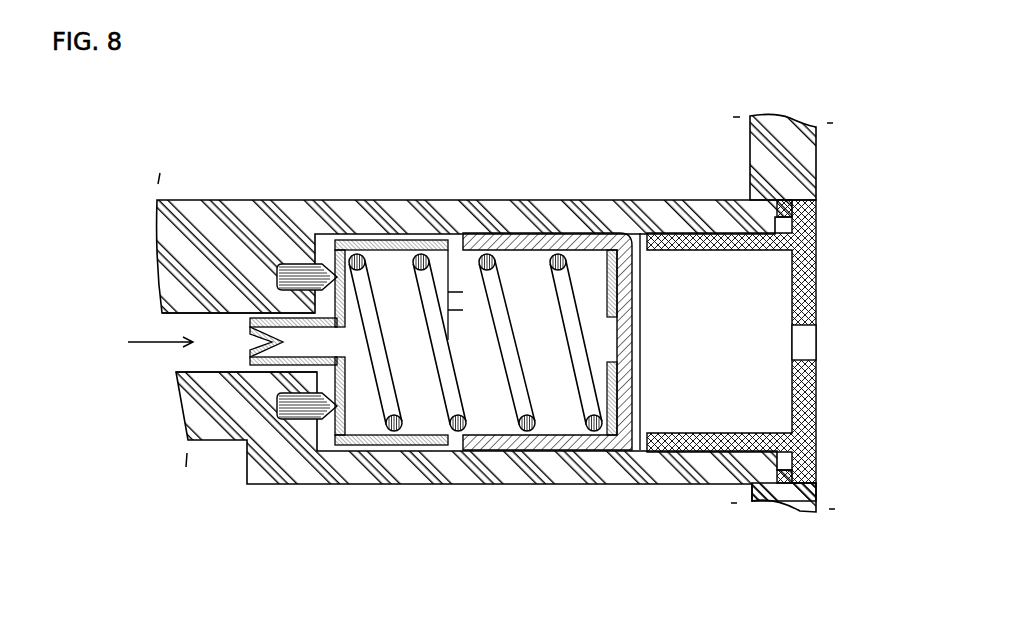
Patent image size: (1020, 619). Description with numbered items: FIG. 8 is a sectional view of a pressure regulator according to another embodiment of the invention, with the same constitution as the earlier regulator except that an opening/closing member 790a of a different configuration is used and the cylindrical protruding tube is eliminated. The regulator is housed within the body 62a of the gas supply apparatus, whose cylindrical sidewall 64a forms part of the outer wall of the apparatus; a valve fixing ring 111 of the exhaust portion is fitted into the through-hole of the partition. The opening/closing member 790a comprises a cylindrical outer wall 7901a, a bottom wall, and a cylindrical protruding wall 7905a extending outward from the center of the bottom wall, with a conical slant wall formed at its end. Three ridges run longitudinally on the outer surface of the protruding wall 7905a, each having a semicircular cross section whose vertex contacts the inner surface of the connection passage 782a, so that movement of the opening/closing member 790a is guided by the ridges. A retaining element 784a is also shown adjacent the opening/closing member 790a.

The body 62a is at (646, 504).
The sidewall 64a is at (817, 155).
The valve fixing ring 111 is at (250, 312).
The connection passage 782a is at (213, 355).
The cylindrical protruding wall 7905a is at (278, 366).
The opening/closing member 790a is at (387, 238).
The cylindrical outer wall 7901a is at (415, 446).
The retainer cup 784a is at (640, 233).